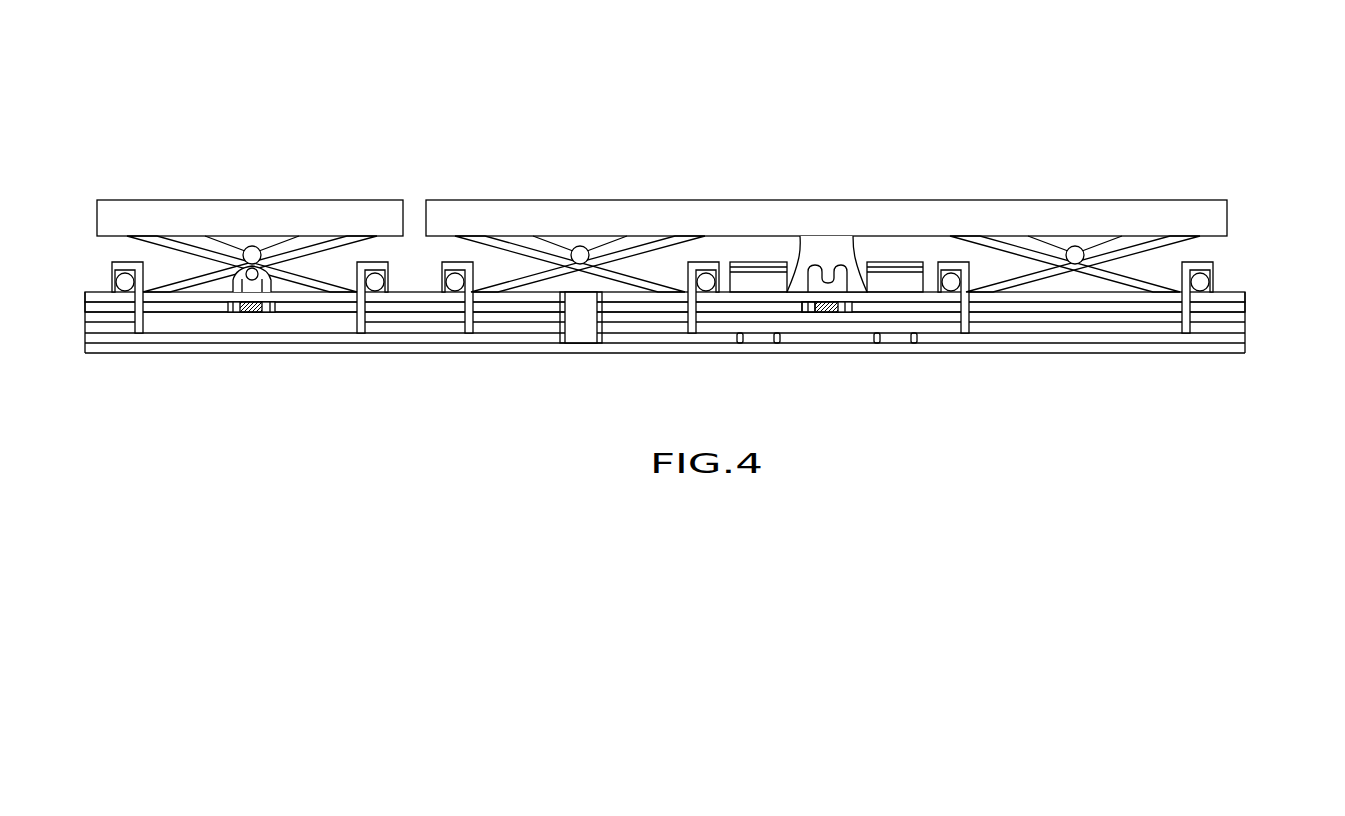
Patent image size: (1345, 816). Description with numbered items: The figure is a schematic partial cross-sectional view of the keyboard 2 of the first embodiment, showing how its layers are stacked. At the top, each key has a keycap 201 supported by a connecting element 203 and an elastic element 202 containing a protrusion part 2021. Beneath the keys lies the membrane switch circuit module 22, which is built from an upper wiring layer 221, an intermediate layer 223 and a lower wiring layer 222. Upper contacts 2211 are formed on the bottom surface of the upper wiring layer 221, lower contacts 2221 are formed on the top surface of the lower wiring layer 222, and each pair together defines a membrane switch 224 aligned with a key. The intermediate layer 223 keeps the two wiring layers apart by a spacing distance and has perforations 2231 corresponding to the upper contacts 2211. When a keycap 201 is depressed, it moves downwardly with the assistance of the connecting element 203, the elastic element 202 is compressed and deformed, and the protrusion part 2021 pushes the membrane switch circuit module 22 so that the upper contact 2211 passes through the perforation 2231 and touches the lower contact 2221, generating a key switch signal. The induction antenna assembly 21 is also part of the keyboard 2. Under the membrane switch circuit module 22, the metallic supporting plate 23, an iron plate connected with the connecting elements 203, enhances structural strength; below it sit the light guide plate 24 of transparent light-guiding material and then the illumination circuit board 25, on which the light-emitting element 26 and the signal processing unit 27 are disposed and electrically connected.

The keyboard 2 is at (1084, 101).
The induction antenna assembly 21 is at (750, 262).
The membrane switch circuit module 22 is at (215, 42).
The upper wiring layer 221 is at (1215, 297).
The lower wiring layer 222 is at (1232, 318).
The intermediate layer 223 is at (1232, 310).
The membrane switch 224 is at (372, 56).
The upper contact 2211 is at (830, 310).
The lower contact 2221 is at (255, 312).
The perforation 2231 is at (806, 310).
The metallic supporting plate 23 is at (1230, 330).
The light guide plate 24 is at (1193, 340).
The illumination circuit board 25 is at (1152, 350).
The light-emitting element 26 is at (757, 338).
The signal processing unit 27 is at (575, 327).
The keycap 201 is at (303, 212).
The elastic element 202 is at (285, 283).
The protrusion part 2021 is at (250, 273).
The connecting element 203 is at (198, 243).